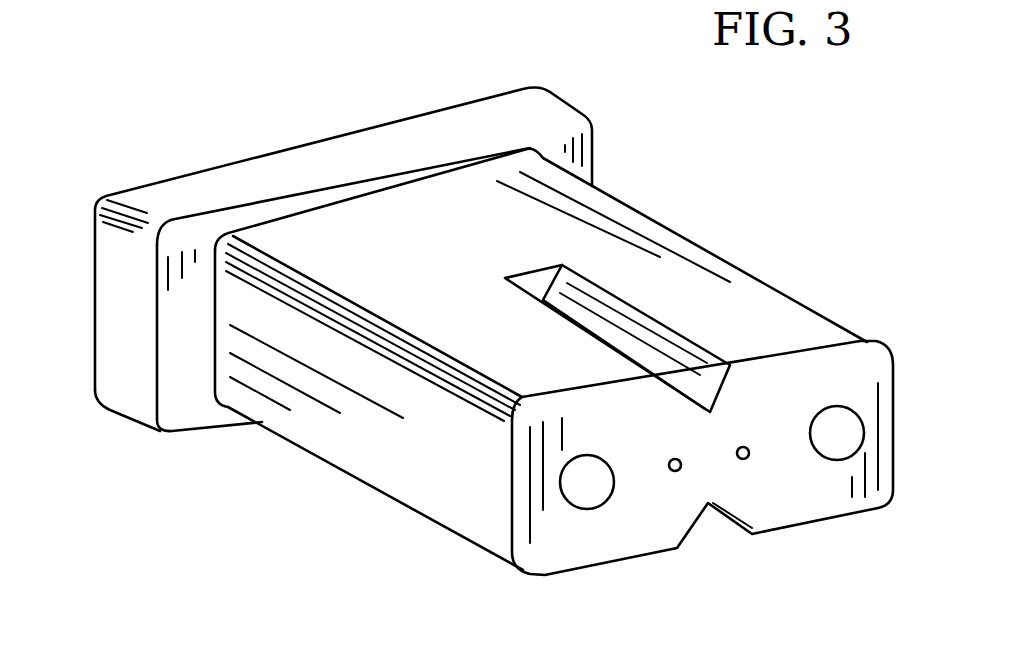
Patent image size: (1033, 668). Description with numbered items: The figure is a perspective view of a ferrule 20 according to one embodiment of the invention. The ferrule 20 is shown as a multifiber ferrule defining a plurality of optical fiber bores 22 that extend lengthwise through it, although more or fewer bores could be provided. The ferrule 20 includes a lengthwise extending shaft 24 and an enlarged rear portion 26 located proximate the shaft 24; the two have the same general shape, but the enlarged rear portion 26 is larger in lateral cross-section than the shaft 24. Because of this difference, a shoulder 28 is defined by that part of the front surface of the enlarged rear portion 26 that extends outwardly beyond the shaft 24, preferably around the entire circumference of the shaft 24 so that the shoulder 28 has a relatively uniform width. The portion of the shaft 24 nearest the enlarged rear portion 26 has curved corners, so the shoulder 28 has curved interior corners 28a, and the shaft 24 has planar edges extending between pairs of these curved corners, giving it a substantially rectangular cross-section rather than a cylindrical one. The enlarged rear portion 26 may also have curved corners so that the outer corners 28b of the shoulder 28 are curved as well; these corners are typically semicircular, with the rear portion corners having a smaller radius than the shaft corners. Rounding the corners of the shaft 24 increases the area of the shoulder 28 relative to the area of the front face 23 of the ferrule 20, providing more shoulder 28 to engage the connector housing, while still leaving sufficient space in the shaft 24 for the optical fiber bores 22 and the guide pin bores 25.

The ferrule 20 is at (745, 188).
The optical fiber bores 22 is at (673, 471).
The front face 23 is at (803, 487).
The shaft 24 is at (382, 449).
The guide pin bores 25 is at (585, 487).
The enlarged rear portion 26 is at (491, 117).
The shoulder 28 is at (588, 162).
The curved interior corners 28a is at (245, 224).
The outer corners 28b is at (566, 103).